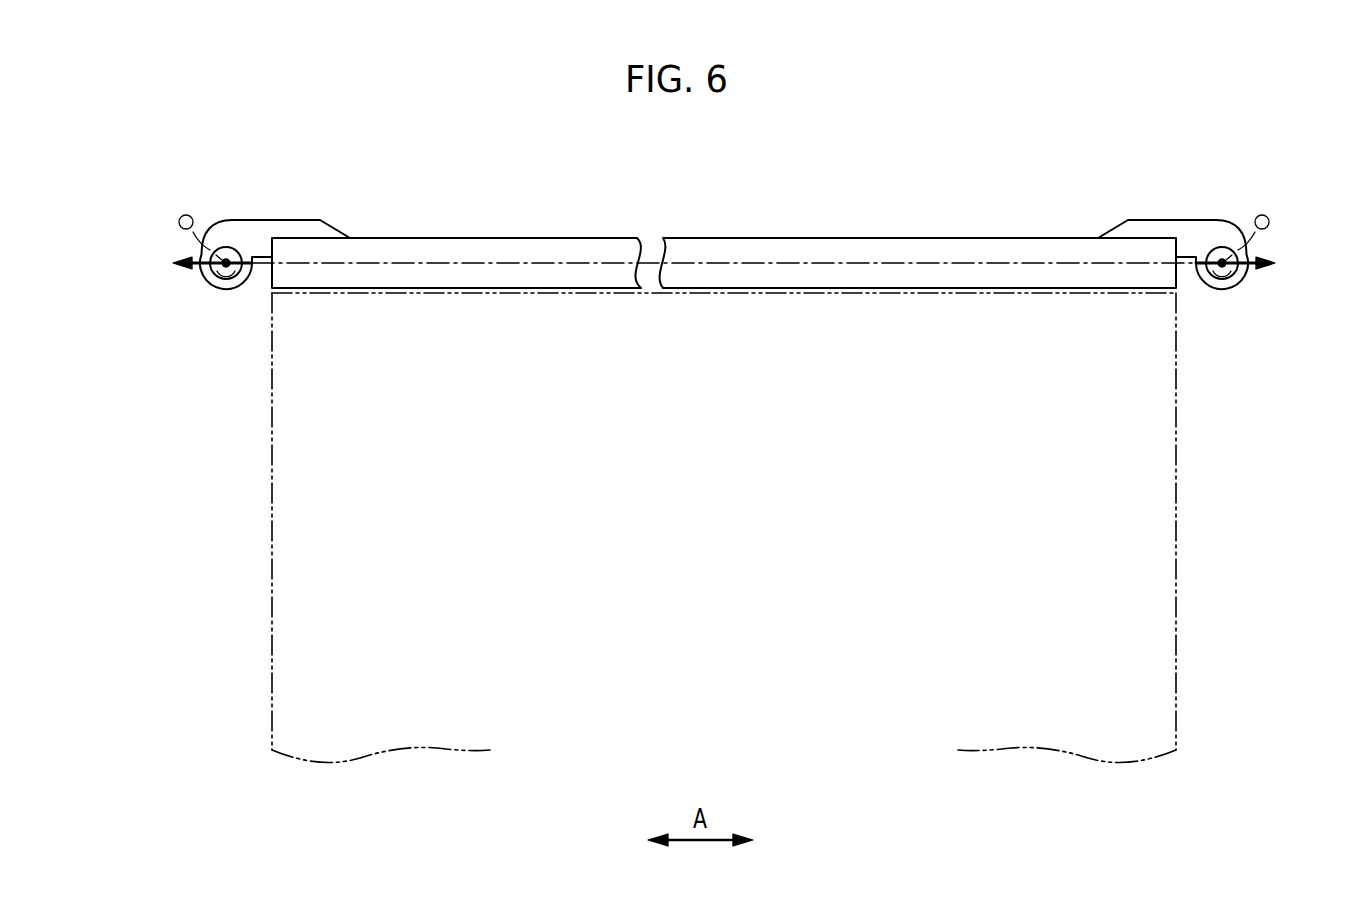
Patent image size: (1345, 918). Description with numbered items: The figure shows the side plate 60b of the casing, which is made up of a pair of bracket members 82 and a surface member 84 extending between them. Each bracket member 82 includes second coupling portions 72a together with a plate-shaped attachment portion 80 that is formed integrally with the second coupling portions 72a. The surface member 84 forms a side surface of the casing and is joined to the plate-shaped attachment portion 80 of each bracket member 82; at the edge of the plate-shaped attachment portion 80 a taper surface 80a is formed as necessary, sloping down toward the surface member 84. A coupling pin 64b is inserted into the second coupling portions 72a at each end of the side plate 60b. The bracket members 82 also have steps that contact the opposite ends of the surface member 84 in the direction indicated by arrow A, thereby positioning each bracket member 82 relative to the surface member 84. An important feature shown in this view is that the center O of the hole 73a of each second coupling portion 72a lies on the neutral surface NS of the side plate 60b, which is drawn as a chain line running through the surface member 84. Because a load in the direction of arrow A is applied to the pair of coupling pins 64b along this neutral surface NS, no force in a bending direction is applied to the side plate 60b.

The side plate 60b is at (500, 158).
The neutral surface NS is at (858, 277).
The surface member 84 is at (533, 272).
The bracket member 82 is at (243, 193).
The plate-shaped attachment portion 80 is at (282, 227).
The taper surface 80a is at (335, 232).
The second coupling portion 72a is at (222, 228).
The hole 73a is at (228, 272).
The coupling pin 64b is at (212, 273).